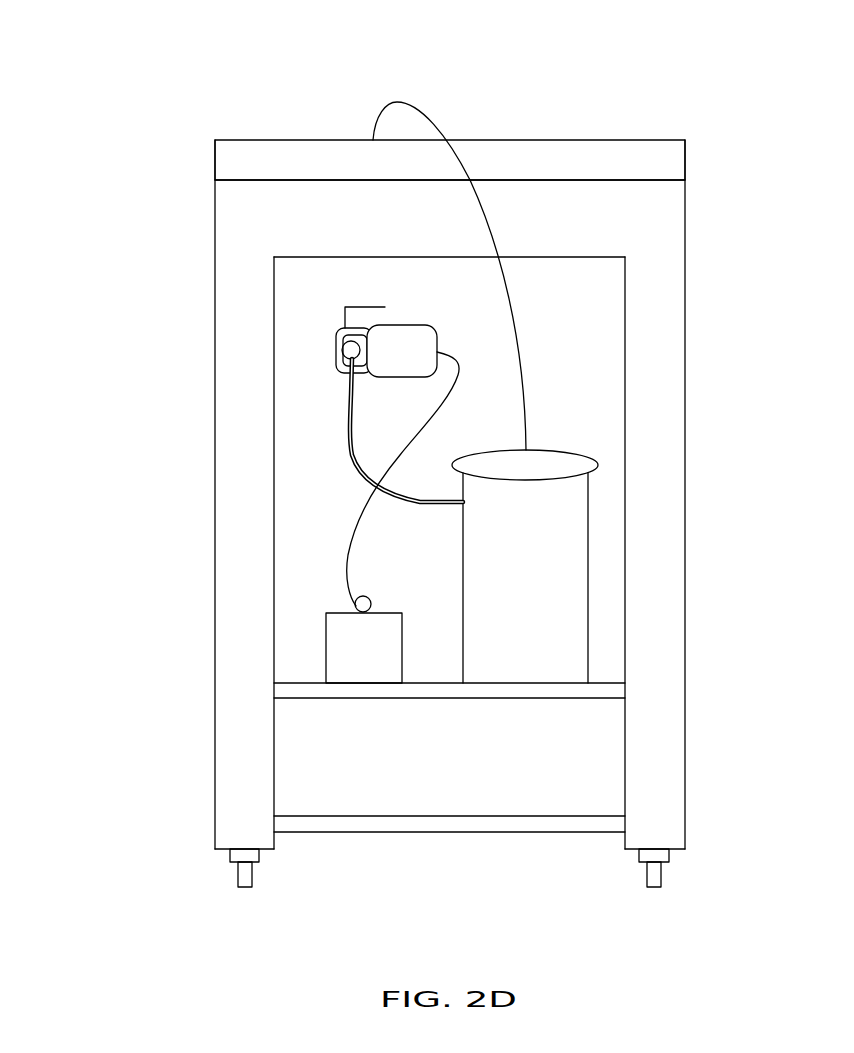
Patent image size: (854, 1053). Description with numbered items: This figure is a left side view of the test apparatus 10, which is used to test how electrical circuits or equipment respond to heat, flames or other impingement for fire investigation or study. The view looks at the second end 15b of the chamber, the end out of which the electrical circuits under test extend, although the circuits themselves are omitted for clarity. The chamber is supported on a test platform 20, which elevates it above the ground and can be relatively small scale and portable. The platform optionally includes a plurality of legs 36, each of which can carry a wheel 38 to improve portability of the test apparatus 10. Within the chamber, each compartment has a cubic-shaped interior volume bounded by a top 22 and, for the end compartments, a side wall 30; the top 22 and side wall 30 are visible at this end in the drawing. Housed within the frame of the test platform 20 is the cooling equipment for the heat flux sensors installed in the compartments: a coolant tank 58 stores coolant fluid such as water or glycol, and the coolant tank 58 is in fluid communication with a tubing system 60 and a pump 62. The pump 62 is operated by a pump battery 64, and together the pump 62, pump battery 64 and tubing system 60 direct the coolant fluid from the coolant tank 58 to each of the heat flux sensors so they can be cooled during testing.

The test apparatus 10 is at (712, 60).
The second end of the chamber 15b is at (191, 183).
The test platform 20 is at (192, 699).
The top 22 is at (288, 140).
The side wall 30 is at (588, 332).
The legs 36 is at (215, 798).
The wheels 38 is at (238, 880).
The coolant tank 58 is at (570, 592).
The tubing system 60 is at (433, 122).
The pump 62 is at (336, 350).
The pump battery 64 is at (326, 630).